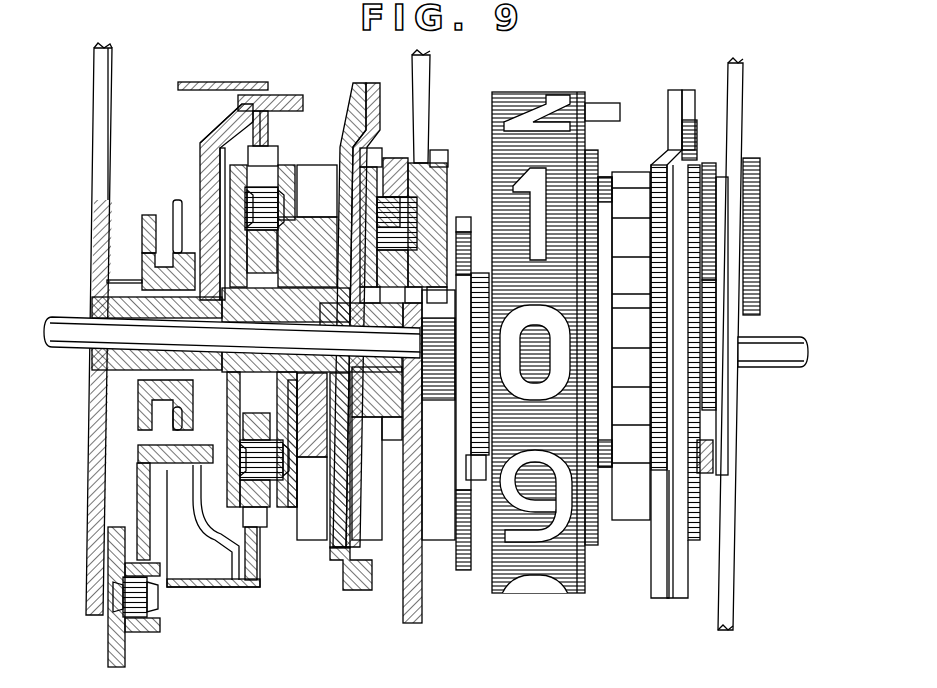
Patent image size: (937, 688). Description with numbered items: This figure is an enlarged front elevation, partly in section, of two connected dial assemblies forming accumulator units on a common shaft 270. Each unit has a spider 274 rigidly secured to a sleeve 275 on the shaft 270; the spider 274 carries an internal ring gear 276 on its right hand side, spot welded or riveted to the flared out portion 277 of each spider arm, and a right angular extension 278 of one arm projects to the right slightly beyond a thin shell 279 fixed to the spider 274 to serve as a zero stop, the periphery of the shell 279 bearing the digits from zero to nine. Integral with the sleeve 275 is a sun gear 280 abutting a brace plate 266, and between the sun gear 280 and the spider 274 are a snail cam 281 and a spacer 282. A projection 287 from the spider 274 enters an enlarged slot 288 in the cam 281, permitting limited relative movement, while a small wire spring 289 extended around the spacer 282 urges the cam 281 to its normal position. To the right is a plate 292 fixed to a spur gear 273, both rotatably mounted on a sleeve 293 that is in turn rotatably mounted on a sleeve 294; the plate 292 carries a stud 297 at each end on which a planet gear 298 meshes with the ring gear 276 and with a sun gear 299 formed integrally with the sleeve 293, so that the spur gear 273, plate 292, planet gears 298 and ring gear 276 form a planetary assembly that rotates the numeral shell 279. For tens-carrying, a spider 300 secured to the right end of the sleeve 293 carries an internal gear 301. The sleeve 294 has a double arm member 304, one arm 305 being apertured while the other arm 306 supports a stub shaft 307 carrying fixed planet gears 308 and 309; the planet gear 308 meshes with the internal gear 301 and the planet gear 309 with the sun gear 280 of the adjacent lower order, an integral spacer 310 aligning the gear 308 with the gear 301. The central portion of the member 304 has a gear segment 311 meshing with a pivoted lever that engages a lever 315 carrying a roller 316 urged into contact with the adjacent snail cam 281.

The brace plate 266 is at (92, 421).
The shaft 270 is at (788, 367).
The spur gear 273 is at (322, 510).
The spider 274 is at (200, 146).
The sleeve 275 is at (125, 302).
The internal ring gear 276 is at (268, 127).
The flared out portion 277 is at (240, 106).
The right angular extension 278 is at (283, 95).
The thin shell 279 is at (222, 82).
The sun gear 280 is at (127, 282).
The snail cam 281 is at (142, 259).
The spacer 282 is at (142, 228).
The projection 287 is at (140, 453).
The enlarged slot 288 is at (138, 468).
The small wire spring 289 is at (180, 226).
The plate 292 is at (282, 507).
The sleeve 293 is at (300, 465).
The sleeve 294 is at (312, 470).
The stud 297 is at (252, 184).
The planet gear 298 is at (300, 177).
The sun gear 299 is at (220, 215).
The spider 300 is at (360, 83).
The internal gear 301 is at (378, 83).
The double arm member 304 is at (707, 335).
The arm 305 is at (718, 462).
The arm 306 is at (405, 160).
The stub shaft 307 is at (420, 205).
The planet gear 308 is at (378, 148).
The planet gear 309 is at (442, 150).
The spacer 310 is at (362, 430).
The gear segment 311 is at (390, 426).
The lever 315 is at (108, 638).
The roller 316 is at (140, 628).